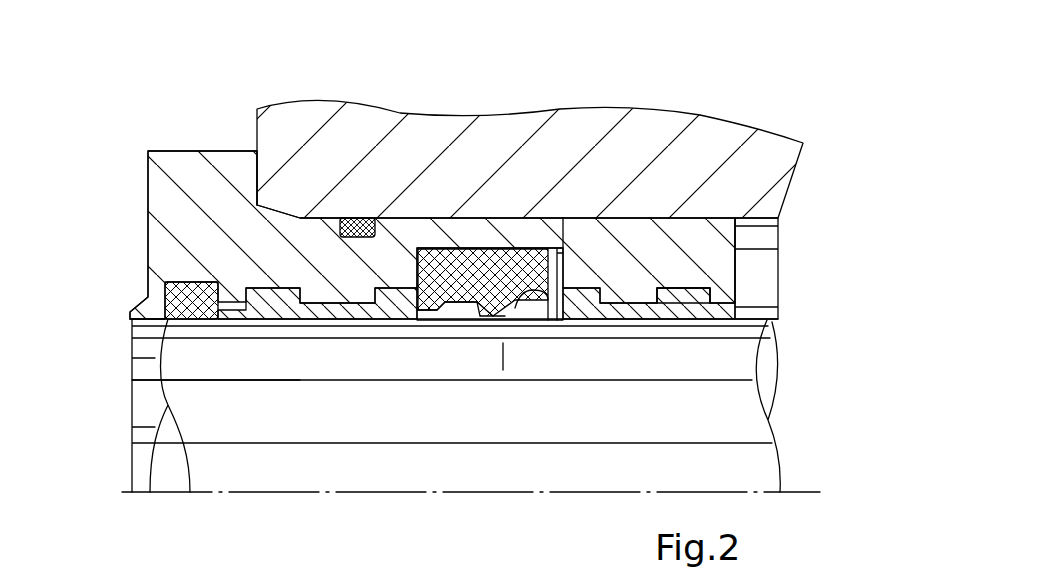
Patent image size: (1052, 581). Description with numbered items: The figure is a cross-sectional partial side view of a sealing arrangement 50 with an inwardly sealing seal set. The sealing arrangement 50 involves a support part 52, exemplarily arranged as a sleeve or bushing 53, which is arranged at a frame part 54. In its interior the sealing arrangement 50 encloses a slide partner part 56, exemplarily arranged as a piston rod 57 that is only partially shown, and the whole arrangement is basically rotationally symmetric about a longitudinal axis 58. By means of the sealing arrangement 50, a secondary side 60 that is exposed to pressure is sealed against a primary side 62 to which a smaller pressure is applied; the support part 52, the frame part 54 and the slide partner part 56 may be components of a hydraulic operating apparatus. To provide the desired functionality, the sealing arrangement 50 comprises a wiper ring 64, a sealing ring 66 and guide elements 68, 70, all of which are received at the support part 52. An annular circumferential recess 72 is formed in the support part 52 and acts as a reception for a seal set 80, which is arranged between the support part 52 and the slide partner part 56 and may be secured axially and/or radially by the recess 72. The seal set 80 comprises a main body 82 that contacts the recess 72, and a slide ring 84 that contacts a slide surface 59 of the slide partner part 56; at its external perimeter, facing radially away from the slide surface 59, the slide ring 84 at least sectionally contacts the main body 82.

The sealing arrangement 50 is at (280, 80).
The support part 52 is at (451, 188).
The sleeve or bushing 53 is at (586, 242).
The frame part 54 is at (423, 148).
The slide partner part 56 is at (185, 470).
The piston rod 57 is at (222, 420).
The longitudinal axis 58 is at (445, 443).
The slide surface 59 is at (500, 368).
The secondary side 60 is at (835, 312).
The primary side 62 is at (124, 263).
The wiper ring 64 is at (193, 290).
The sealing ring 66 is at (355, 217).
The guide element 68 is at (529, 425).
The guide element 70 is at (678, 300).
The recess 72 is at (618, 260).
The seal set 80 is at (496, 298).
The main body 82 is at (508, 267).
The slide ring 84 is at (458, 318).